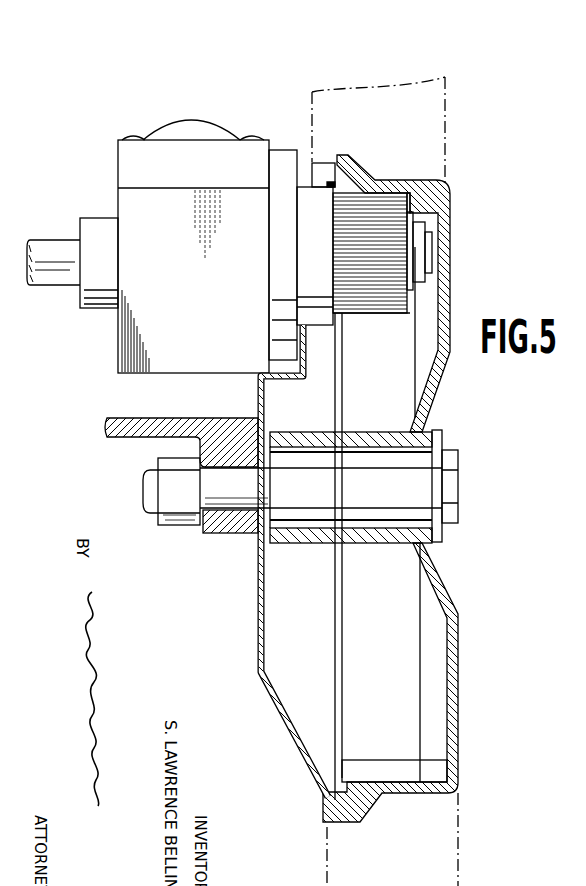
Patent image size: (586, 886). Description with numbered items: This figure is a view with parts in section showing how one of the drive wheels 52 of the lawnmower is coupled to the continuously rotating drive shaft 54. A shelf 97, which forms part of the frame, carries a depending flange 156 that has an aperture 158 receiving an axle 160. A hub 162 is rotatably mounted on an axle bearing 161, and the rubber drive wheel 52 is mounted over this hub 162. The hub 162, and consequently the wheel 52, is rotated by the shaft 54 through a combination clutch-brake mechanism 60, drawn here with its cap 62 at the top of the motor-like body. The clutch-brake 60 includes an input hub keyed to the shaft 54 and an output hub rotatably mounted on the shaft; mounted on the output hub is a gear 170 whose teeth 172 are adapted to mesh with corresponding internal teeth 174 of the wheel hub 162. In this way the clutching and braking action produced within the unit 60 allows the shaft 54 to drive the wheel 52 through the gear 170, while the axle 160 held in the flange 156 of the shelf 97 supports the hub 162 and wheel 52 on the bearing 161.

The drive wheel 52 is at (444, 108).
The shaft 54 is at (57, 243).
The clutch-brake mechanism 60 is at (240, 125).
The motor cap 62 is at (192, 127).
The shelf 97 is at (125, 432).
The depending flange 156 is at (243, 532).
The aperture 158 is at (203, 526).
The axle 160 is at (230, 488).
The axle bearing 161 is at (422, 457).
The hub 162 is at (385, 537).
The gear 170 is at (387, 215).
The teeth 172 is at (393, 314).
The internal teeth 174 is at (392, 768).